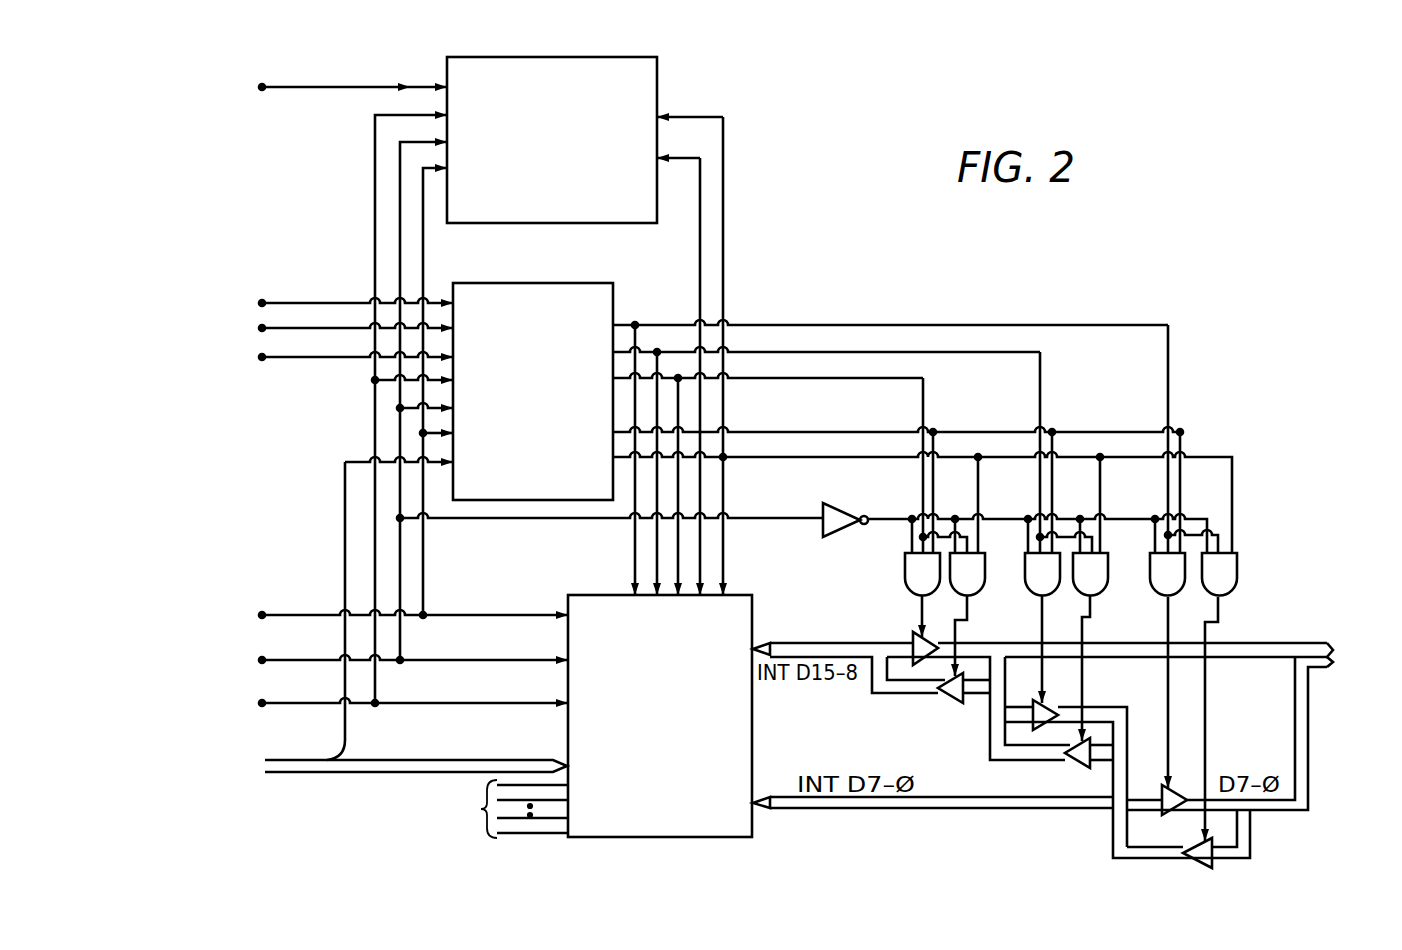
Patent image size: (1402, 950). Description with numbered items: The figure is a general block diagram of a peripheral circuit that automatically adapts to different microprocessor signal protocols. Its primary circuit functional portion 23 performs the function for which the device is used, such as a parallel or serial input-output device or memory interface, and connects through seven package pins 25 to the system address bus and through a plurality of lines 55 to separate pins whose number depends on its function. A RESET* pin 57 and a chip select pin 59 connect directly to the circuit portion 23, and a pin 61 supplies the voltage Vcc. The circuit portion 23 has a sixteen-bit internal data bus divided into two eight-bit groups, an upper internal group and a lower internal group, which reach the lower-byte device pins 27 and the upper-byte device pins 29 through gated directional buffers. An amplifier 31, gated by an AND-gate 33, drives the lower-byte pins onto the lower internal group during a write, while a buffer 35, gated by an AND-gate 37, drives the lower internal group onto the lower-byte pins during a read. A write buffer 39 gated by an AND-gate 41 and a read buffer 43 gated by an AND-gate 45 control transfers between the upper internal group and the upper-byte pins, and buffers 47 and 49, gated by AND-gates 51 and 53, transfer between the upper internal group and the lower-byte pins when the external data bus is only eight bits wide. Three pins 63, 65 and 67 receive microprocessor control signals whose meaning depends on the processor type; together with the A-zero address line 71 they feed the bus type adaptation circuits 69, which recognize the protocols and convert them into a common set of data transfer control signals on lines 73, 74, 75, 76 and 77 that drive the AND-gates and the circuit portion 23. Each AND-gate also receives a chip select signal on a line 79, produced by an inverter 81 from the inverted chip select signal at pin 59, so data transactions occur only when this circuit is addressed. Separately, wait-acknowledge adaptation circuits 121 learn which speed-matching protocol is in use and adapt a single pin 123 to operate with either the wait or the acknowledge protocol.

The wait-acknowledge adaptation circuits 121 is at (613, 57).
The WAIT*-ACK* pin 123 is at (263, 88).
The control signal pin 65 is at (263, 302).
The control signal pin 63 is at (263, 327).
The control signal pin 67 is at (263, 358).
The bus type adaptation circuits 69 is at (567, 282).
The A0 address line 71 is at (345, 492).
The voltage supply pin 61 is at (262, 615).
The chip select pin 59 is at (263, 659).
The RESET* pin 57 is at (263, 702).
The address pins 25 is at (263, 770).
The function lines 55 is at (510, 809).
The primary circuit functional portion 23 is at (696, 837).
The internal control signal line 73 is at (860, 323).
The internal control signal line 74 is at (882, 352).
The internal control signal line 75 is at (882, 378).
The internal control signal line 76 is at (882, 415).
The internal control signal line 77 is at (873, 457).
The inverter 81 is at (843, 490).
The chip select line 79 is at (890, 525).
The AND-gate 45 is at (907, 590).
The AND-gate 41 is at (975, 594).
The AND-gate 53 is at (1027, 555).
The AND-gate 51 is at (1105, 593).
The AND-gate 37 is at (1150, 553).
The AND-gate 33 is at (1230, 578).
The read buffer 43 is at (913, 632).
The write buffer 39 is at (955, 703).
The buffer 49 is at (1040, 703).
The buffer 47 is at (1082, 765).
The buffer 35 is at (1170, 795).
The amplifier 31 is at (1206, 866).
The device pins 29 is at (1331, 642).
The device pins 27 is at (1331, 667).